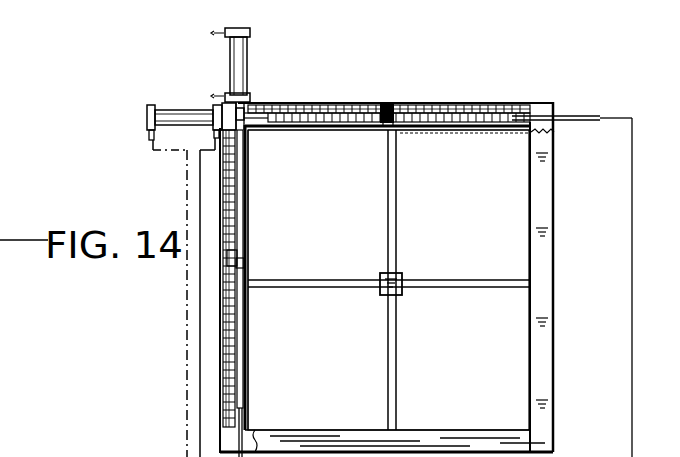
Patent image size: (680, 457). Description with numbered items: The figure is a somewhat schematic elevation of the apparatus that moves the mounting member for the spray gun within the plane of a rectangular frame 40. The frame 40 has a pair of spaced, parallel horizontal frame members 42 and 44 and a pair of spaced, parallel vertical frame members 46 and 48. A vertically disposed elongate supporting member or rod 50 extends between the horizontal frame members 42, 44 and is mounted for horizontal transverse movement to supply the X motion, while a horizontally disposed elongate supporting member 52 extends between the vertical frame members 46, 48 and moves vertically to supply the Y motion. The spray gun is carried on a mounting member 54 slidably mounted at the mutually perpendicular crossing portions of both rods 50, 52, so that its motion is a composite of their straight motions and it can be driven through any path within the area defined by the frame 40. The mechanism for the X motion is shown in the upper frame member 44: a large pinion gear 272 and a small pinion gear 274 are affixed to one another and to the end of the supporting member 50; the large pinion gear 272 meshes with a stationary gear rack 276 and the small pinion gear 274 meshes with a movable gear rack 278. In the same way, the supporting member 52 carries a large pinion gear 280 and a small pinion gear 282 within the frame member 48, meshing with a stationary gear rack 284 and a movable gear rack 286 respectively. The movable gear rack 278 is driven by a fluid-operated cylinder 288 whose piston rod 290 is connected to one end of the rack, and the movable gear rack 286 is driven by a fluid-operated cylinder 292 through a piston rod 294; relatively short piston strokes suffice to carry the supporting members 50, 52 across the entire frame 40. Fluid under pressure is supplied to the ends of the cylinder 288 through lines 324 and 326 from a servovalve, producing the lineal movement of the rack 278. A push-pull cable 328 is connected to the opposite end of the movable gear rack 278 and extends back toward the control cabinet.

The rectangular frame 40 is at (212, 338).
The horizontal frame member 42 is at (471, 430).
The horizontal frame member 44 is at (452, 105).
The vertical frame member 46 is at (554, 251).
The vertical frame member 48 is at (222, 200).
The elongate supporting member 50 is at (396, 246).
The elongate supporting member 52 is at (338, 290).
The mounting member 54 is at (398, 294).
The large pinion gear 272 is at (386, 106).
The small pinion gear 274 is at (382, 121).
The stationary gear rack 276 is at (342, 105).
The movable gear rack 278 is at (446, 125).
The large pinion gear 280 is at (233, 265).
The small pinion gear 282 is at (242, 262).
The stationary gear rack 284 is at (240, 225).
The movable gear rack 286 is at (243, 195).
The fluid-operated cylinder 288 is at (178, 106).
The piston rod 290 is at (218, 104).
The fluid-operated cylinder 292 is at (229, 53).
The piston rod 294 is at (240, 112).
The fluid line 324 is at (212, 136).
The fluid line 326 is at (147, 128).
The push-pull cable 328 is at (596, 118).